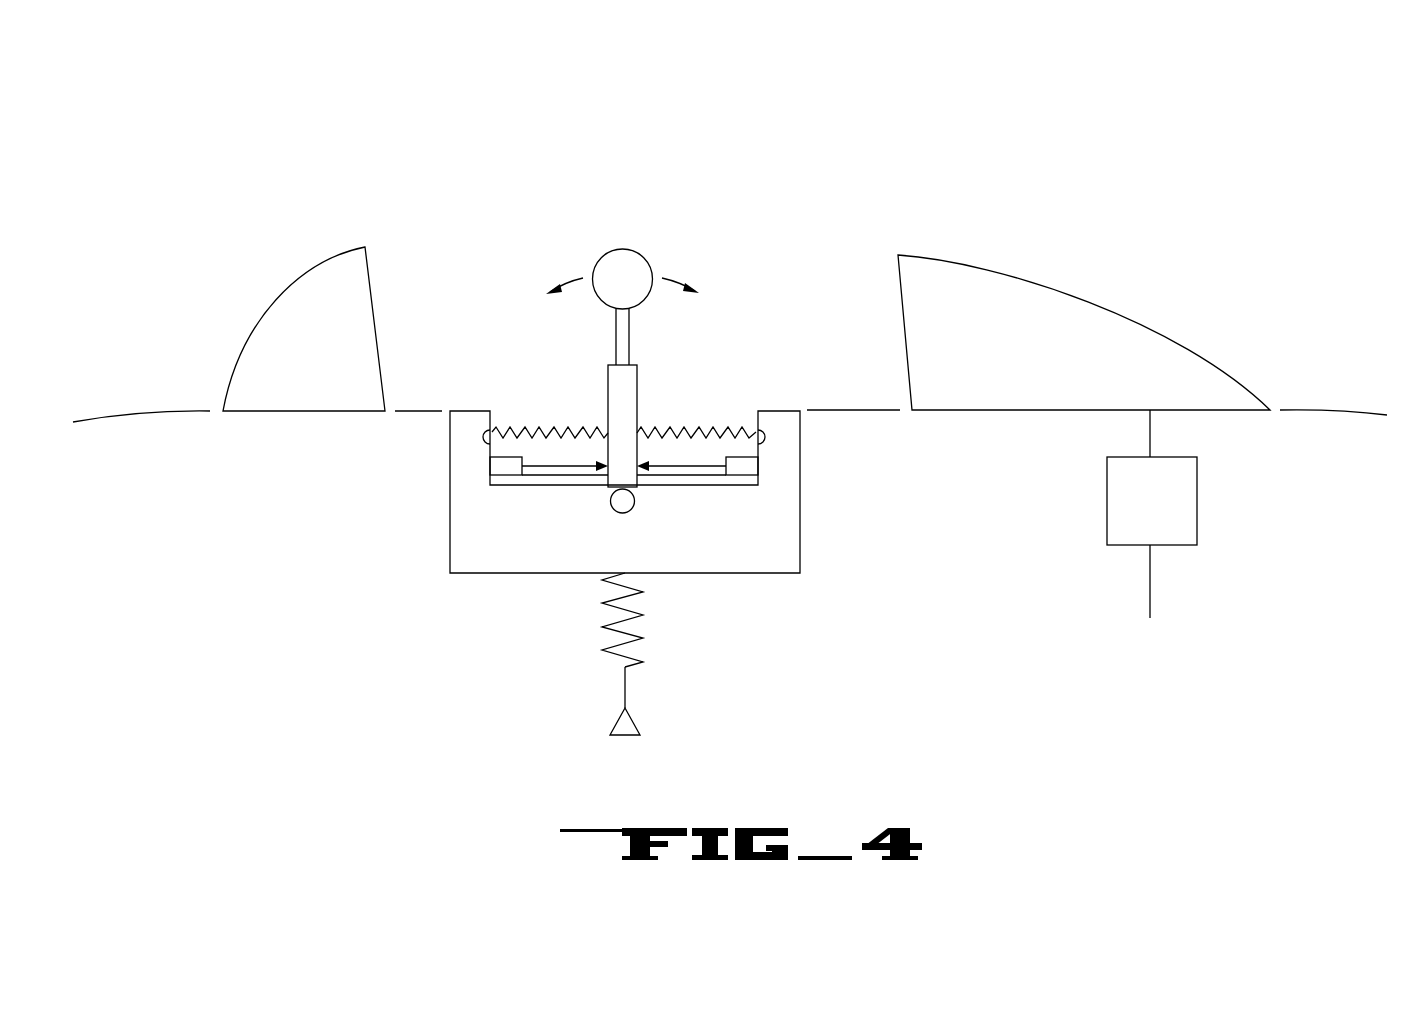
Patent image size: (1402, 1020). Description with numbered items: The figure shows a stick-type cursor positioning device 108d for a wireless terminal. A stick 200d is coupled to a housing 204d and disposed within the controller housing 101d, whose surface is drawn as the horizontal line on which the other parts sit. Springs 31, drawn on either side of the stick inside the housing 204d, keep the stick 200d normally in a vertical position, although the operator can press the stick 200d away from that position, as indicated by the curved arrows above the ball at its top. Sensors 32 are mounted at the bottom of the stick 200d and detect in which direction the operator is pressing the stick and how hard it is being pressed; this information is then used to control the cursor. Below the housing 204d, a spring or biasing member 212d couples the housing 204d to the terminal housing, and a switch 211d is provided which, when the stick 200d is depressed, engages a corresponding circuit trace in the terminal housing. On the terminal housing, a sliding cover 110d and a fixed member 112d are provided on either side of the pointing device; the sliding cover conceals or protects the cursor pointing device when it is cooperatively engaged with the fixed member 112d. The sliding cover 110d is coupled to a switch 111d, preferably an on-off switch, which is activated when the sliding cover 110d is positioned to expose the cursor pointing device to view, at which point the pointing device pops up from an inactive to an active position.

The controller housing 101d is at (1312, 430).
The stick-type cursor positioning device 108d is at (853, 128).
The sliding cover 110d is at (1025, 273).
The switch 111d is at (1197, 488).
The fixed member 112d is at (282, 298).
The stick 200d is at (627, 333).
The housing 204d is at (753, 563).
The switch 211d is at (628, 602).
The spring or biasing member 212d is at (608, 652).
The springs 31 is at (550, 425).
The sensors 32 is at (505, 470).